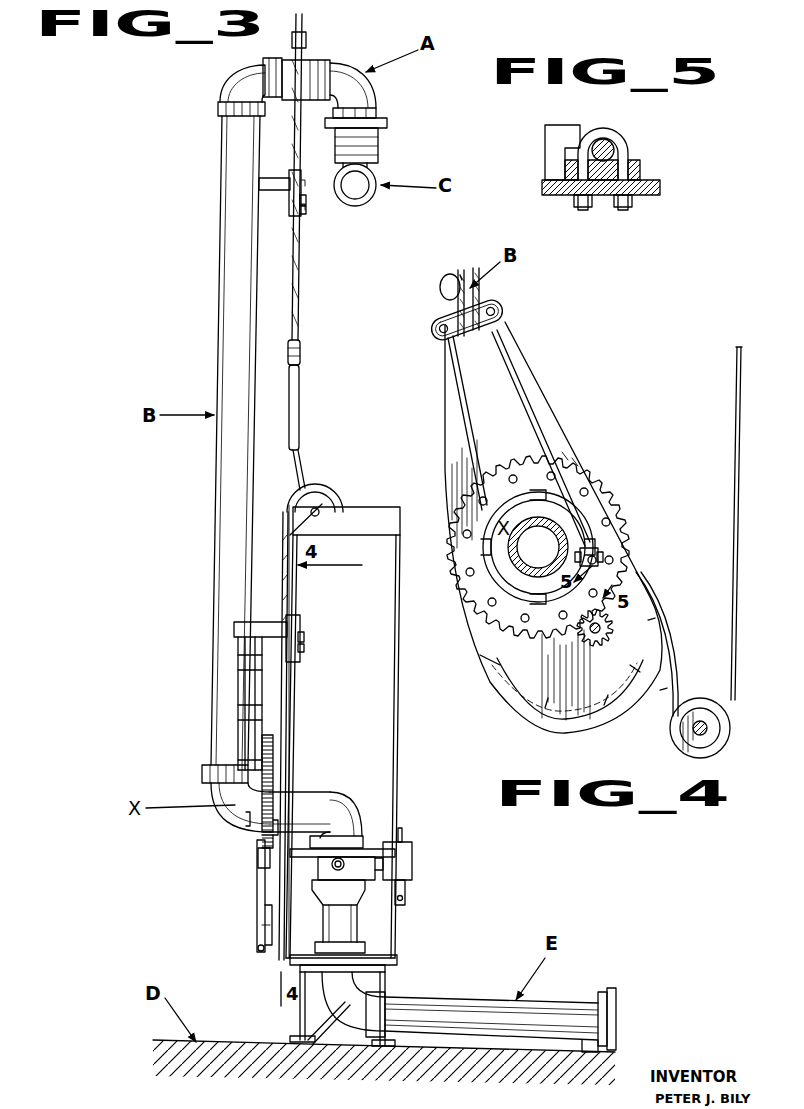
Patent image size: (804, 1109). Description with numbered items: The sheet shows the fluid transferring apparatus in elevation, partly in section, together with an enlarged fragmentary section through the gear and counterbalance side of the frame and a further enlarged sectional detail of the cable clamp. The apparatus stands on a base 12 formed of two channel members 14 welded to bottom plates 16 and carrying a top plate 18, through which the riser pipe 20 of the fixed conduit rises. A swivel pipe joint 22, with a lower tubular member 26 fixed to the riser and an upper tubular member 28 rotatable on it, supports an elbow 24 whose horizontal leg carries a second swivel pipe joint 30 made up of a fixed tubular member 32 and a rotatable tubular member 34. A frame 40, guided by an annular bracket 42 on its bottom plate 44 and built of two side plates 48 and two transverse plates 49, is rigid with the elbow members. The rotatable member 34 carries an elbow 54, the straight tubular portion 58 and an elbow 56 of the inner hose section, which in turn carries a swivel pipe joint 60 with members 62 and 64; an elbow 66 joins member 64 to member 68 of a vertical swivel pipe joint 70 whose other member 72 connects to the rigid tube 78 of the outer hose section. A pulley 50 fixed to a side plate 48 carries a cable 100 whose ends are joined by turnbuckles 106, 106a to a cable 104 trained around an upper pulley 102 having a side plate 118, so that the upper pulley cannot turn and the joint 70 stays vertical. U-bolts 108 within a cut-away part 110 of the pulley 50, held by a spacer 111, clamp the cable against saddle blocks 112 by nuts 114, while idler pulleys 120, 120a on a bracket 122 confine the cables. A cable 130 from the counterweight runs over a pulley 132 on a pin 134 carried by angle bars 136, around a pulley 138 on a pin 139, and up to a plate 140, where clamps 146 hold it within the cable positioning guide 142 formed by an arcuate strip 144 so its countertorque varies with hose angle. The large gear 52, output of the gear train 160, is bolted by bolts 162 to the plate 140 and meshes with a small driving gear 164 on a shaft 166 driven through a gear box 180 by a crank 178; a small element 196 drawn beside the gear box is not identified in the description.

In FIG. 3, the base 12 is at (398, 1000).
In FIG. 3, the channel members 14 is at (386, 1000).
In FIG. 3, the bottom plates 16 is at (302, 1043).
In FIG. 3, the top plate 18 is at (374, 965).
In FIG. 3, the riser pipe 20 is at (342, 930).
In FIG. 3, the swivel pipe joint 22 is at (366, 842).
In FIG. 3, the elbow 24 is at (332, 800).
In FIG. 3, the lower tubular member 26 is at (364, 870).
In FIG. 3, the upper tubular member 28 is at (340, 840).
In FIG. 3, the swivel pipe joint 30 is at (226, 790).
In FIG. 3, the tubular member 32 is at (328, 793).
In FIG. 3, the tubular member 34 is at (246, 818).
In FIG. 4, the tubular member 34 is at (522, 575).
In FIG. 3, the frame 40 is at (400, 760).
In FIG. 3, the annular bracket 42 is at (352, 948).
In FIG. 3, the bottom plate 44 is at (306, 962).
In FIG. 3, the side plates 48 is at (400, 670).
In FIG. 5, the side plates 48 is at (662, 188).
In FIG. 3, the transverse plates 49 is at (343, 746).
In FIG. 3, the pulley 50 is at (280, 752).
In FIG. 5, the pulley 50 is at (560, 140).
In FIG. 4, the pulley 50 is at (563, 488).
In FIG. 3, the large gear 52 is at (264, 842).
In FIG. 4, the large gear 52 is at (603, 503).
In FIG. 3, the elbow 54 is at (215, 768).
In FIG. 3, the elbow 56 is at (240, 88).
In FIG. 3, the tubular portion 58 is at (238, 352).
In FIG. 4, the tubular portion 58 is at (480, 290).
In FIG. 3, the swivel pipe joint 60 is at (262, 70).
In FIG. 3, the tubular member 62 is at (264, 78).
In FIG. 3, the tubular member 64 is at (288, 100).
In FIG. 3, the elbow 66 is at (346, 86).
In FIG. 3, the tubular member 68 is at (359, 113).
In FIG. 3, the swivel pipe joint 70 is at (384, 140).
In FIG. 3, the tubular member 72 is at (380, 155).
In FIG. 3, the rigid tube 78 is at (374, 196).
In FIG. 3, the cable 100 is at (300, 592).
In FIG. 5, the cable 100 is at (614, 146).
In FIG. 4, the cable 100 is at (535, 420).
In FIG. 3, the pulley 102 is at (304, 40).
In FIG. 3, the cable 104 is at (296, 296).
In FIG. 3, the turnbuckle 106 is at (296, 392).
In FIG. 3, the turnbuckle 106a is at (298, 368).
In FIG. 5, the U-bolts 108 is at (622, 156).
In FIG. 4, the U-bolts 108 is at (600, 560).
In FIG. 5, the cut-away part 110 is at (590, 128).
In FIG. 4, the spacer 111 is at (600, 572).
In FIG. 5, the saddle block 112 is at (628, 172).
In FIG. 4, the saddle block 112 is at (600, 552).
In FIG. 5, the nuts 114 is at (598, 200).
In FIG. 3, the side plate 118 is at (292, 38).
In FIG. 3, the idler pulley 120 is at (303, 216).
In FIG. 4, the idler pulley 120 is at (437, 330).
In FIG. 3, the idler pulley 120a is at (305, 205).
In FIG. 4, the idler pulley 120a is at (502, 305).
In FIG. 3, the bracket 122 is at (268, 186).
In FIG. 3, the cable 130 is at (287, 555).
In FIG. 4, the cable 130 is at (655, 606).
In FIG. 3, the pulley 132 is at (306, 486).
In FIG. 3, the pin 134 is at (320, 510).
In FIG. 3, the angle bars 136 is at (340, 533).
In FIG. 3, the pulley 138 is at (258, 948).
In FIG. 4, the pulley 138 is at (729, 728).
In FIG. 4, the pin 139 is at (706, 732).
In FIG. 3, the plate 140 is at (258, 895).
In FIG. 4, the plate 140 is at (553, 527).
In FIG. 3, the cable positioning guide 142 is at (262, 915).
In FIG. 4, the cable positioning guide 142 is at (582, 732).
In FIG. 3, the strip 144 is at (262, 926).
In FIG. 4, the strip 144 is at (553, 722).
In FIG. 4, the clamps 146 is at (548, 525).
In FIG. 3, the gear train 160 is at (264, 828).
In FIG. 4, the gear train 160 is at (578, 462).
In FIG. 4, the bolts 162 is at (551, 472).
In FIG. 3, the small driving gear 164 is at (259, 870).
In FIG. 4, the small driving gear 164 is at (602, 628).
In FIG. 3, the shaft 166 is at (386, 865).
In FIG. 4, the shaft 166 is at (600, 634).
In FIG. 3, the crank 178 is at (404, 898).
In FIG. 3, the gear box 180 is at (406, 856).
In FIG. 3, the pin 196 is at (404, 836).